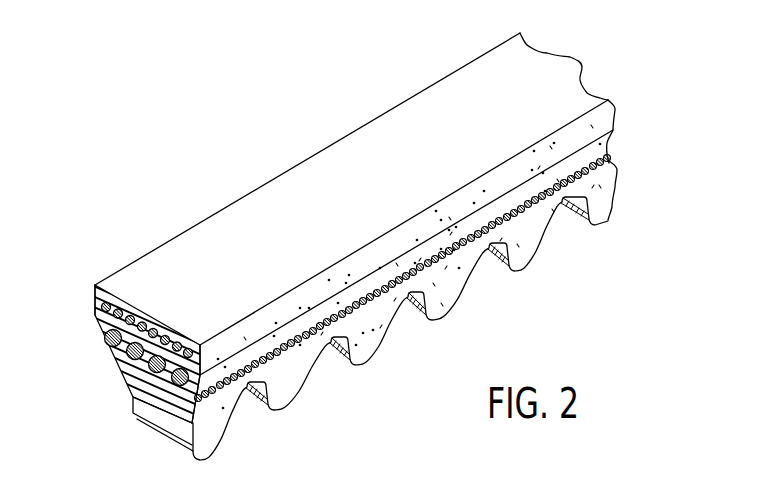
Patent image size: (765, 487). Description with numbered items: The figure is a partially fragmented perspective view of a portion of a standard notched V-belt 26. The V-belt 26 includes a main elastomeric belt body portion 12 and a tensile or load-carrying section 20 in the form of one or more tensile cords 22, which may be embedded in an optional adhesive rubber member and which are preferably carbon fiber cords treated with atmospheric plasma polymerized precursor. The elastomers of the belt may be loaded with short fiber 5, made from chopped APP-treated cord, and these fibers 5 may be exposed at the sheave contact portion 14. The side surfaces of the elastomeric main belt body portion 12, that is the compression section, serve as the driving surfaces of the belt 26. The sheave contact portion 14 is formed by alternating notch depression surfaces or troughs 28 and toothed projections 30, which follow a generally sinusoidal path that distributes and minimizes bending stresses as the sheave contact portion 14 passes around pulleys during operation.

The main elastomeric belt body portion 12 is at (382, 153).
The V-belt 26 is at (213, 205).
The load-carrying section 20 is at (98, 326).
The tensile cords 22 is at (137, 367).
The short fiber 5 is at (383, 301).
The sheave contact portion 14 is at (371, 356).
The notch depression surfaces 28 is at (490, 263).
The toothed projections 30 is at (535, 245).